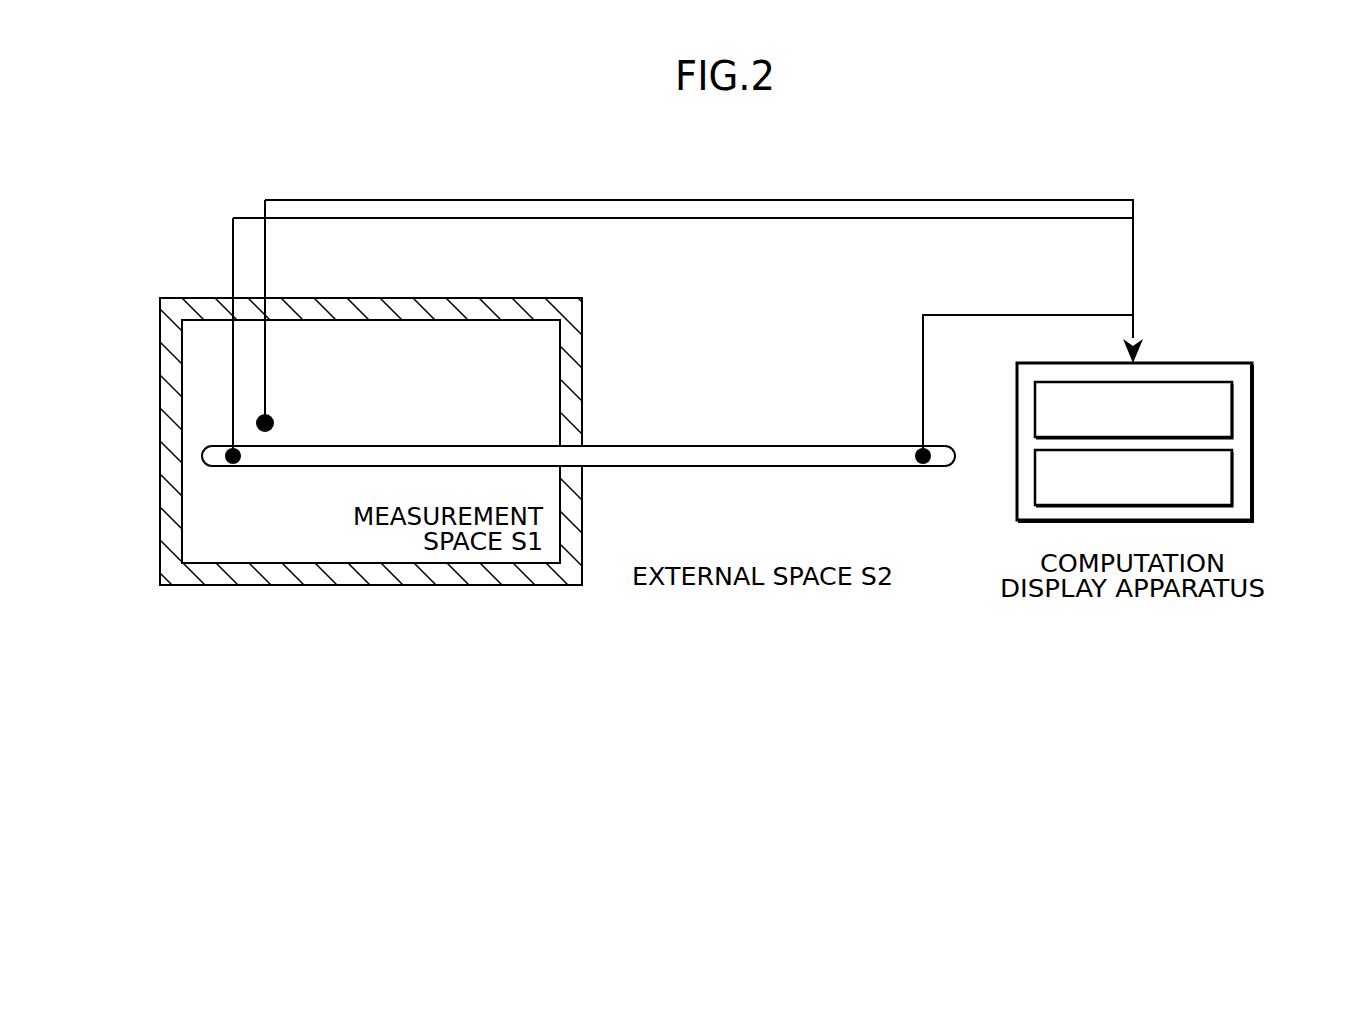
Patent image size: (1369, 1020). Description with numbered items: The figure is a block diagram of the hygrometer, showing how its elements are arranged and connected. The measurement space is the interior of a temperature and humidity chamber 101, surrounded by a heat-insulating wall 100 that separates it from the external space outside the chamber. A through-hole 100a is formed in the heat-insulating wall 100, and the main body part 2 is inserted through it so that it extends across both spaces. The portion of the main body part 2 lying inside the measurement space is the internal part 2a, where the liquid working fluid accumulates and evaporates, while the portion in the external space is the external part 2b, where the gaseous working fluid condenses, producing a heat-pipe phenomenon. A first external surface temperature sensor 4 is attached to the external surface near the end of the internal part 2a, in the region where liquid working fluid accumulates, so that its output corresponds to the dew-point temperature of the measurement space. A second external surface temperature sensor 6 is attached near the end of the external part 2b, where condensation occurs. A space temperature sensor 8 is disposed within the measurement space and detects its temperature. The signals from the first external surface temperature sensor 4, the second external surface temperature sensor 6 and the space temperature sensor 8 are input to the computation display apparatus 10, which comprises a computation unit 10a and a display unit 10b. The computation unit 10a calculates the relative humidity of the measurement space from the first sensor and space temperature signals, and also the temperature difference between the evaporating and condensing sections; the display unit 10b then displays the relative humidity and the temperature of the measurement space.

The main body part 2 is at (741, 426).
The internal part 2a is at (477, 446).
The external part 2b is at (822, 445).
The first external surface temperature sensor 4 is at (242, 461).
The second external surface temperature sensor 6 is at (934, 461).
The space temperature sensor 8 is at (274, 423).
The computation display apparatus 10 is at (1264, 361).
The computation unit 10a is at (1252, 470).
The display unit 10b is at (1252, 402).
The heat-insulating wall 100 is at (455, 297).
The through-hole 100a is at (582, 460).
The temperature and humidity chamber 101 is at (136, 375).